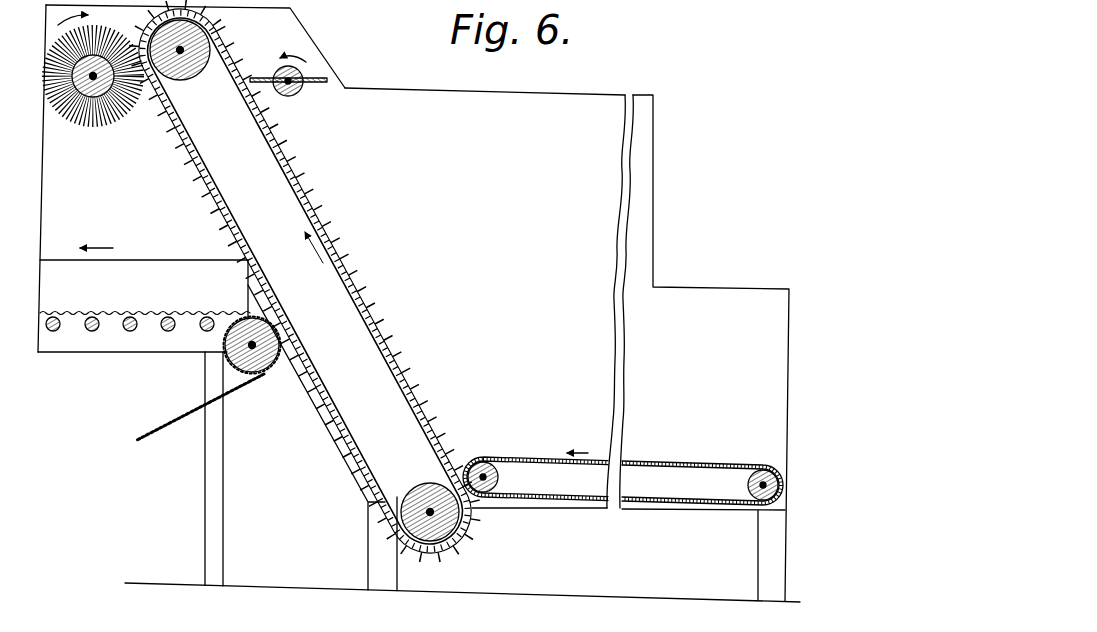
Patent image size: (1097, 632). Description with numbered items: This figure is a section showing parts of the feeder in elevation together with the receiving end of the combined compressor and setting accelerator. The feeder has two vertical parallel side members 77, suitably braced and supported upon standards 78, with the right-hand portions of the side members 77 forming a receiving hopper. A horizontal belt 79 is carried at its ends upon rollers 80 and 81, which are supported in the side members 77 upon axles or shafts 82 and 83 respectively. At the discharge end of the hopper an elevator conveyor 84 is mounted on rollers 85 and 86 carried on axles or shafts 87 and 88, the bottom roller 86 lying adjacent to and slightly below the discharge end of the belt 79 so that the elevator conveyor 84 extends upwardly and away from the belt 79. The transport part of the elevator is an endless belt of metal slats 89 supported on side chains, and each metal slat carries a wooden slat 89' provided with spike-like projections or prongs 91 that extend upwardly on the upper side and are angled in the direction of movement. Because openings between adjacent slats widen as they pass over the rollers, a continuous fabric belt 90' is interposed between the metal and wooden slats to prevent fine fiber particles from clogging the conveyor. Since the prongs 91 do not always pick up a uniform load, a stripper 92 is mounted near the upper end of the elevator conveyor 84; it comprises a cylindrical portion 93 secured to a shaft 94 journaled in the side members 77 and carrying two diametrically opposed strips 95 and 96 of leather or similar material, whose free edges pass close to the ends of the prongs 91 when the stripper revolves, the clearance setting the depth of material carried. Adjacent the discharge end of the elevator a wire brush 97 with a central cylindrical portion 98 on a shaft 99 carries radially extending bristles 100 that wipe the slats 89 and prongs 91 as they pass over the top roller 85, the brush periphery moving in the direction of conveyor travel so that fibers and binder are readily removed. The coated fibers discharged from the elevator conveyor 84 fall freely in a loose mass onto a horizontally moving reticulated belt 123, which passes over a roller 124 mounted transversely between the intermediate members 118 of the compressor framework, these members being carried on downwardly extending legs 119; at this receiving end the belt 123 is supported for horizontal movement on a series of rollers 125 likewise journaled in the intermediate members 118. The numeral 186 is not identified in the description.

The side members 77 is at (521, 104).
The standards 78 is at (772, 553).
The belt 79 is at (665, 464).
The roller 80 is at (499, 483).
The roller 81 is at (748, 486).
The axle or shaft 82 is at (486, 471).
The axle or shaft 83 is at (402, 90).
The elevator conveyor 84 is at (377, 331).
The roller 85 is at (200, 52).
The roller 86 is at (457, 530).
The axle or shaft 87 is at (183, 49).
The axle or shaft 88 is at (424, 502).
The metal slats 89 is at (304, 281).
The wooden slat 89' is at (338, 263).
The continuous fabric belt 90' is at (305, 281).
The projections or prongs 91 is at (347, 273).
The stripper 92 is at (300, 94).
The cylindrical portion 93 is at (303, 76).
The shaft 94 is at (293, 97).
The strip 95 is at (328, 79).
The strip 96 is at (257, 78).
The wire brush 97 is at (75, 124).
The central cylindrical portion 98 is at (91, 100).
The shaft 99 is at (103, 98).
The bristles 100 is at (137, 108).
The intermediate members 118 is at (80, 340).
The legs 119 is at (220, 483).
The reticulated belt 123 is at (158, 431).
The roller 124 is at (230, 364).
The rollers 125 is at (157, 313).
The hopper 186 is at (152, 274).